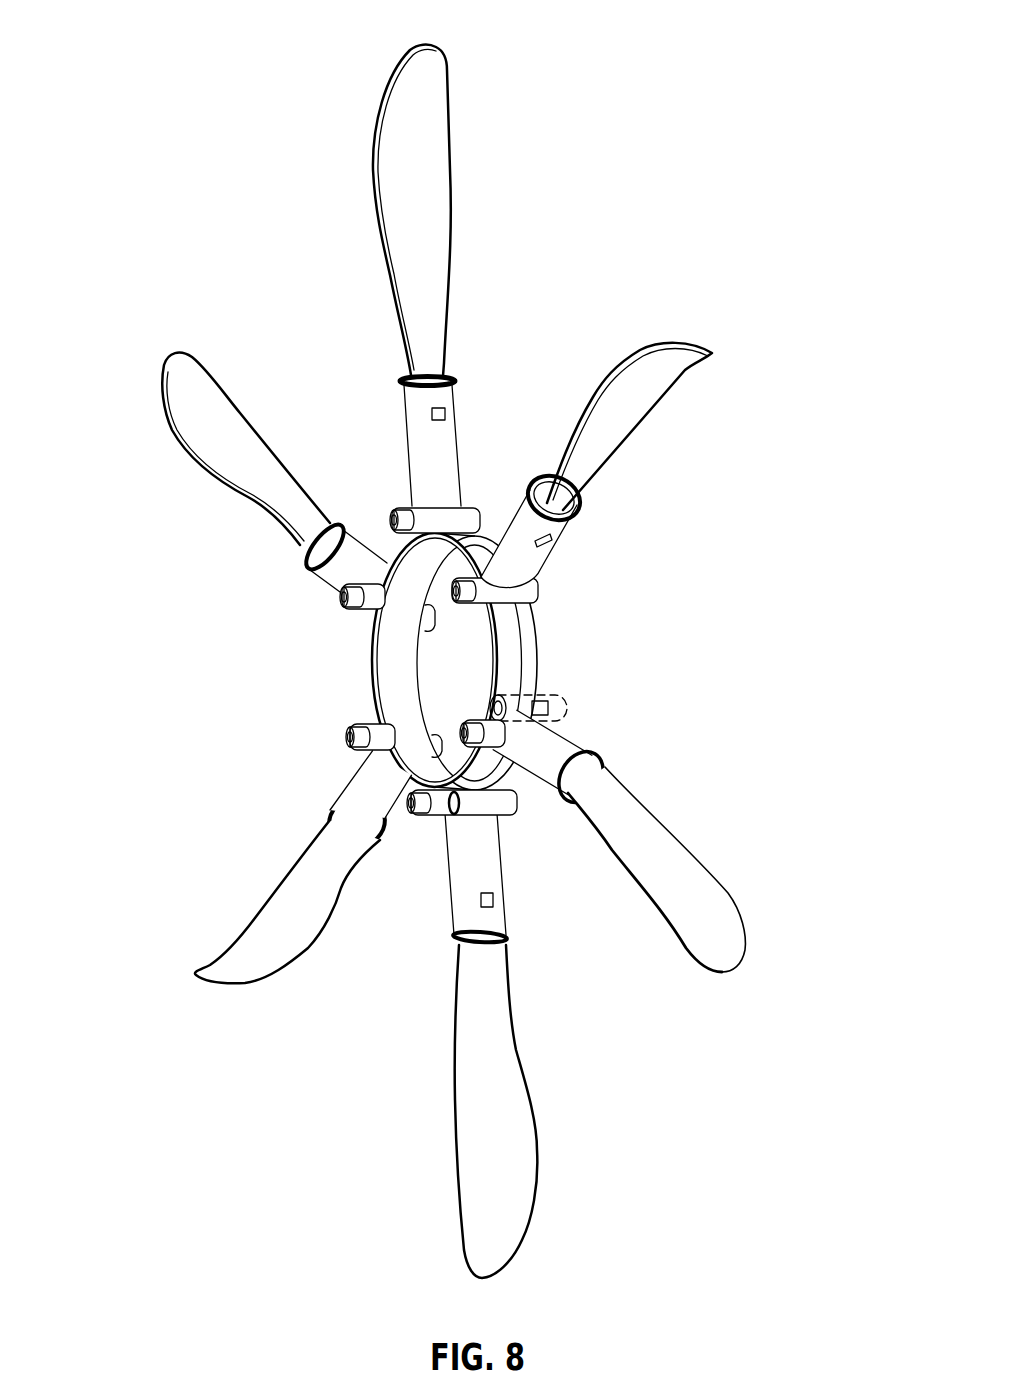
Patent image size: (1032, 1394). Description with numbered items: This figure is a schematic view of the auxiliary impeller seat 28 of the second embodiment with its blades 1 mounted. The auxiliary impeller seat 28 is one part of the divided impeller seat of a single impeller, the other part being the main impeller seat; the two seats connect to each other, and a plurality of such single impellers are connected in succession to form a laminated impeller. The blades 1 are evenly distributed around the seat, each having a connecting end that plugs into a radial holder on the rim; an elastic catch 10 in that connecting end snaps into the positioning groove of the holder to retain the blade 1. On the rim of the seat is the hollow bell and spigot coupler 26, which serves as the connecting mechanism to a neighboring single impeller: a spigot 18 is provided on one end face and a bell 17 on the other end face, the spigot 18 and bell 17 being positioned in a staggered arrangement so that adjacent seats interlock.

The blade 1 is at (408, 213).
The elastic catch 10 is at (445, 415).
The bell 17 is at (566, 698).
The spigot 18 is at (465, 737).
The hollow bell and spigot coupler 26 is at (443, 806).
The auxiliary impeller seat 28 is at (590, 1003).